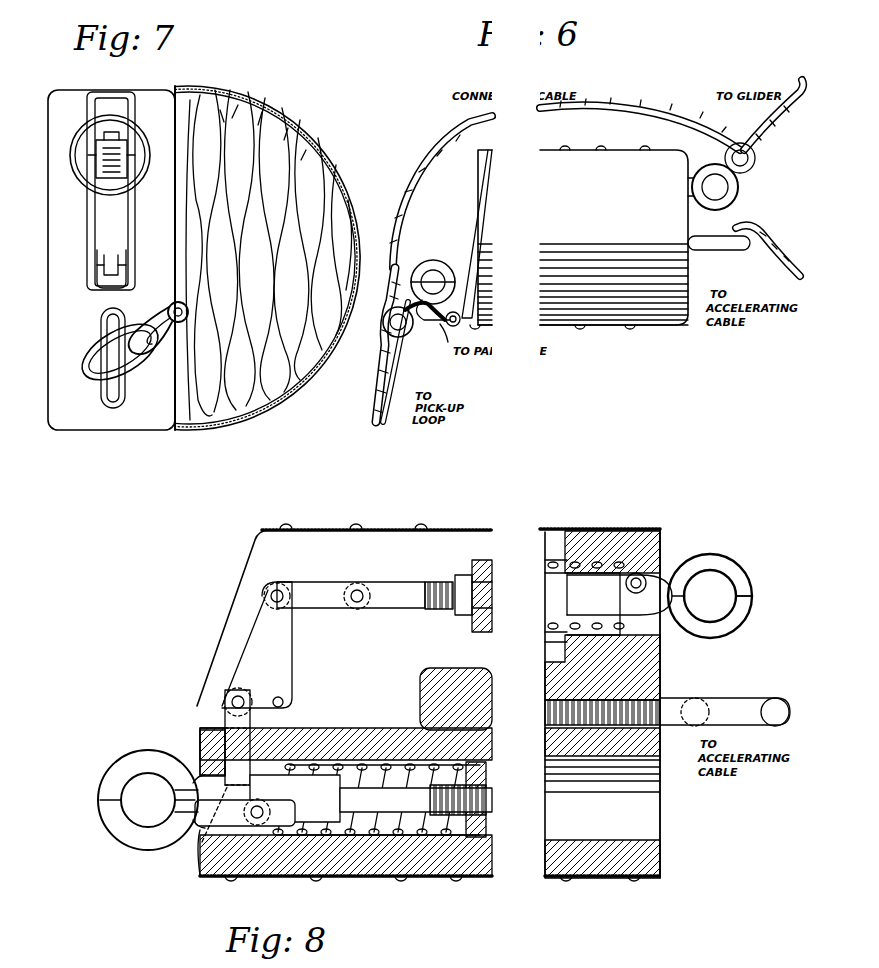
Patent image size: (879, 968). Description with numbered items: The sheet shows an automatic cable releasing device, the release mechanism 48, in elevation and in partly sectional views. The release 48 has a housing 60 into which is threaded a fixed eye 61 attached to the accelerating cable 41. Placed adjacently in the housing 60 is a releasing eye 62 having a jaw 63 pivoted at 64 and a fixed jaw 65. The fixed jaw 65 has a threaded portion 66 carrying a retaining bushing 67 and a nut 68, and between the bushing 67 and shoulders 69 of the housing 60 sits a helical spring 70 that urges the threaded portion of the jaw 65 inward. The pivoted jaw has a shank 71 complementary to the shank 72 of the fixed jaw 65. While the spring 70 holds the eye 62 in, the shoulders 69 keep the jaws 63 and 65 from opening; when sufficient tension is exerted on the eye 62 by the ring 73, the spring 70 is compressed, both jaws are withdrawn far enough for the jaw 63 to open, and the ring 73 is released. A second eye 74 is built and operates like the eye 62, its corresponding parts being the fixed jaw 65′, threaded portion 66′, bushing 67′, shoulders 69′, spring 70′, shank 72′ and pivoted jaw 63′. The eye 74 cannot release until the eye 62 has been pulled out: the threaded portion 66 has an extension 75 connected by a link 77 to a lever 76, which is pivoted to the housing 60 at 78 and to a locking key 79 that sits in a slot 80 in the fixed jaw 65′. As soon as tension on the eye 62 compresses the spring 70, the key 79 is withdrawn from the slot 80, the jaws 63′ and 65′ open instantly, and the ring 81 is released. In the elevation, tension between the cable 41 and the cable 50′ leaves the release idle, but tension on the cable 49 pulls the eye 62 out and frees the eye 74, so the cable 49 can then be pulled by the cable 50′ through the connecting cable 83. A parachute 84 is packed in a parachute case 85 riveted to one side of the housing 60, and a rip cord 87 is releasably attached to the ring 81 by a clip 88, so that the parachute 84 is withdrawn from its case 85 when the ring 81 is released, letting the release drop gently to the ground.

In FIG. 6, the cable 41 is at (770, 242).
In FIG. 6, the release mechanism 48 is at (575, 237).
In FIG. 8, the release mechanism 48 is at (428, 702).
In FIG. 6, the cable 49 is at (800, 90).
In FIG. 6, the cable 50′ is at (380, 418).
In FIG. 7, the housing 60 is at (58, 345).
In FIG. 8, the housing 60 is at (672, 677).
In FIG. 6, the fixed eye 61 is at (722, 250).
In FIG. 8, the fixed eye 61 is at (752, 706).
In FIG. 6, the releasing eye 62 is at (738, 196).
In FIG. 8, the releasing eye 62 is at (686, 570).
In FIG. 8, the jaw 63 is at (738, 568).
In FIG. 8, the jaw 63′ is at (116, 825).
In FIG. 8, the pivot 64 is at (636, 578).
In FIG. 8, the fixed jaw 65 is at (740, 612).
In FIG. 8, the fixed jaw 65′ is at (104, 788).
In FIG. 8, the threaded portion 66 is at (545, 506).
In FIG. 8, the threaded portion 66′ is at (345, 795).
In FIG. 7, the retaining bushing 67 is at (80, 140).
In FIG. 8, the retaining bushing 67′ is at (478, 838).
In FIG. 7, the nut 68 is at (108, 140).
In FIG. 8, the nut 68 is at (486, 560).
In FIG. 8, the shoulders 69 is at (644, 570).
In FIG. 8, the shoulders 69′ is at (205, 755).
In FIG. 8, the helical spring 70 is at (560, 560).
In FIG. 8, the helical spring 70′ is at (448, 835).
In FIG. 8, the shank 71 is at (619, 585).
In FIG. 8, the shank 72 is at (560, 630).
In FIG. 8, the shank 72′ is at (248, 780).
In FIG. 6, the ring 73 is at (752, 168).
In FIG. 7, the eye 74 is at (110, 394).
In FIG. 6, the eye 74 is at (430, 265).
In FIG. 8, the eye 74 is at (140, 838).
In FIG. 8, the extension 75 is at (398, 590).
In FIG. 7, the lever 76 is at (95, 242).
In FIG. 8, the lever 76 is at (282, 660).
In FIG. 7, the link 77 is at (122, 132).
In FIG. 8, the link 77 is at (314, 590).
In FIG. 8, the pivot 78 is at (284, 702).
In FIG. 7, the locking key 79 is at (95, 292).
In FIG. 8, the locking key 79 is at (232, 716).
In FIG. 8, the slot 80 is at (196, 852).
In FIG. 7, the ring 81 is at (126, 374).
In FIG. 6, the ring 81 is at (396, 340).
In FIG. 6, the connecting cable 83 is at (636, 118).
In FIG. 7, the parachute 84 is at (262, 228).
In FIG. 7, the parachute case 85 is at (305, 145).
In FIG. 6, the parachute case 85 is at (655, 330).
In FIG. 7, the rip cord 87 is at (200, 320).
In FIG. 7, the clip 88 is at (170, 330).